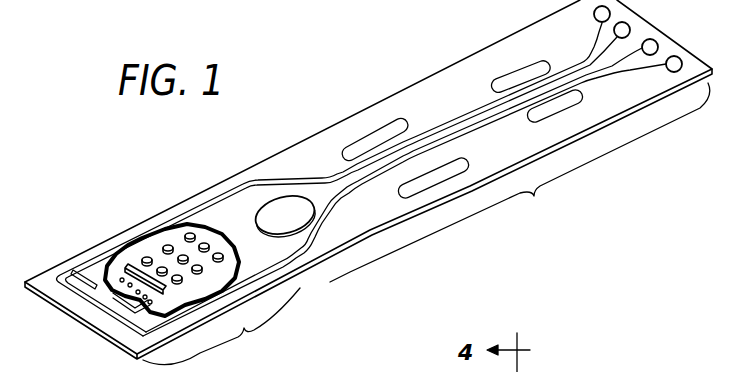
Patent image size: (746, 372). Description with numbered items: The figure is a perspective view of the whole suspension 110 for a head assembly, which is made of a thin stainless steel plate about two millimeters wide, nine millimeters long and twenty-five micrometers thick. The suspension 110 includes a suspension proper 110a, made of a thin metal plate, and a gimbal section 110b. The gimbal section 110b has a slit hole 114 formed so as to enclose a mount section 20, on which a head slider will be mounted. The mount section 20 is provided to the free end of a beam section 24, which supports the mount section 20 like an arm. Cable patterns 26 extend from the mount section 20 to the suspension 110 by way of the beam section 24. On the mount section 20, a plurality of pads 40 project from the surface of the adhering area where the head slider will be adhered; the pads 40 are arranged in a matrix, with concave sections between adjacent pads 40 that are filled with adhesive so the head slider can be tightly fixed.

The suspension 110 is at (428, 251).
The suspension proper 110a is at (520, 144).
The gimbal section 110b is at (221, 326).
The pads 40 is at (138, 235).
The slit hole 114 is at (210, 228).
The mount section 20 is at (158, 243).
The beam section 24 is at (104, 290).
The cable patterns 26 is at (108, 299).